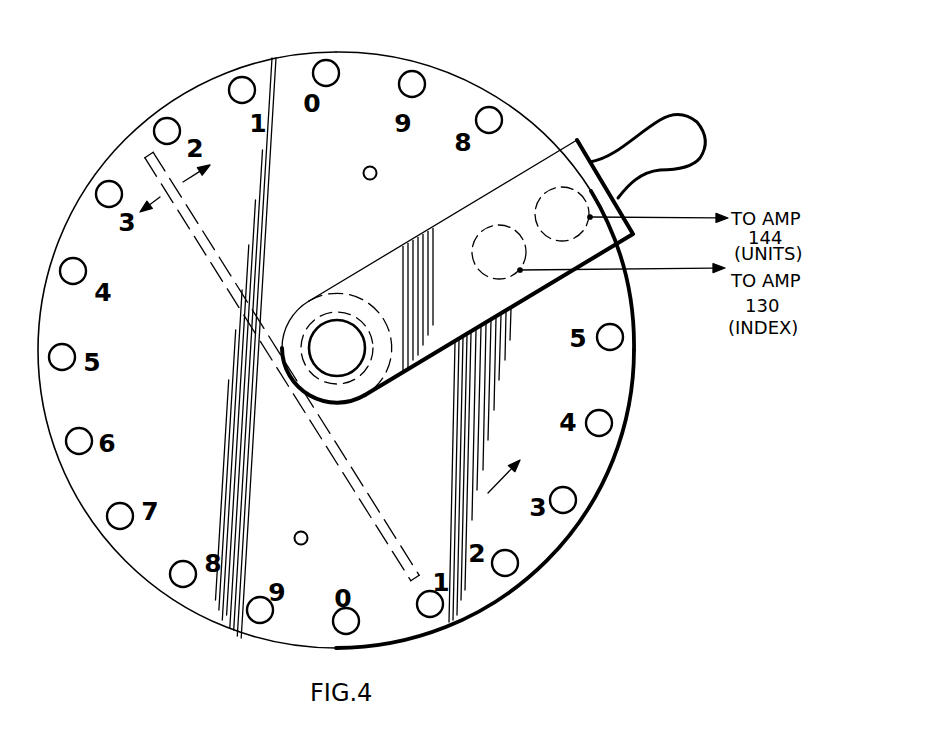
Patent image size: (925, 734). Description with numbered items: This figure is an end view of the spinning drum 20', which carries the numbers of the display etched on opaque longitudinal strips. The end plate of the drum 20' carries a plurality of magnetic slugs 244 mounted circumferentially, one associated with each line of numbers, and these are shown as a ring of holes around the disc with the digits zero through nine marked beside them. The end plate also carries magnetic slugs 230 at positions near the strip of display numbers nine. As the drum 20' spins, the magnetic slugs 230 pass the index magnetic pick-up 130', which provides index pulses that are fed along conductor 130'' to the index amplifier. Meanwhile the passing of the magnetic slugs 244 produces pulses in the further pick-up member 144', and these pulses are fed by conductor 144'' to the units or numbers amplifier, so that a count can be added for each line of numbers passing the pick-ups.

The drum 20' is at (336, 350).
The magnetic slugs 244 is at (241, 78).
The magnetic slugs 230 is at (366, 178).
The index magnetic pick-up 130' is at (493, 368).
The pick-up member 144' is at (538, 196).
The conductor 144'' is at (658, 206).
The conductor 130'' is at (621, 255).